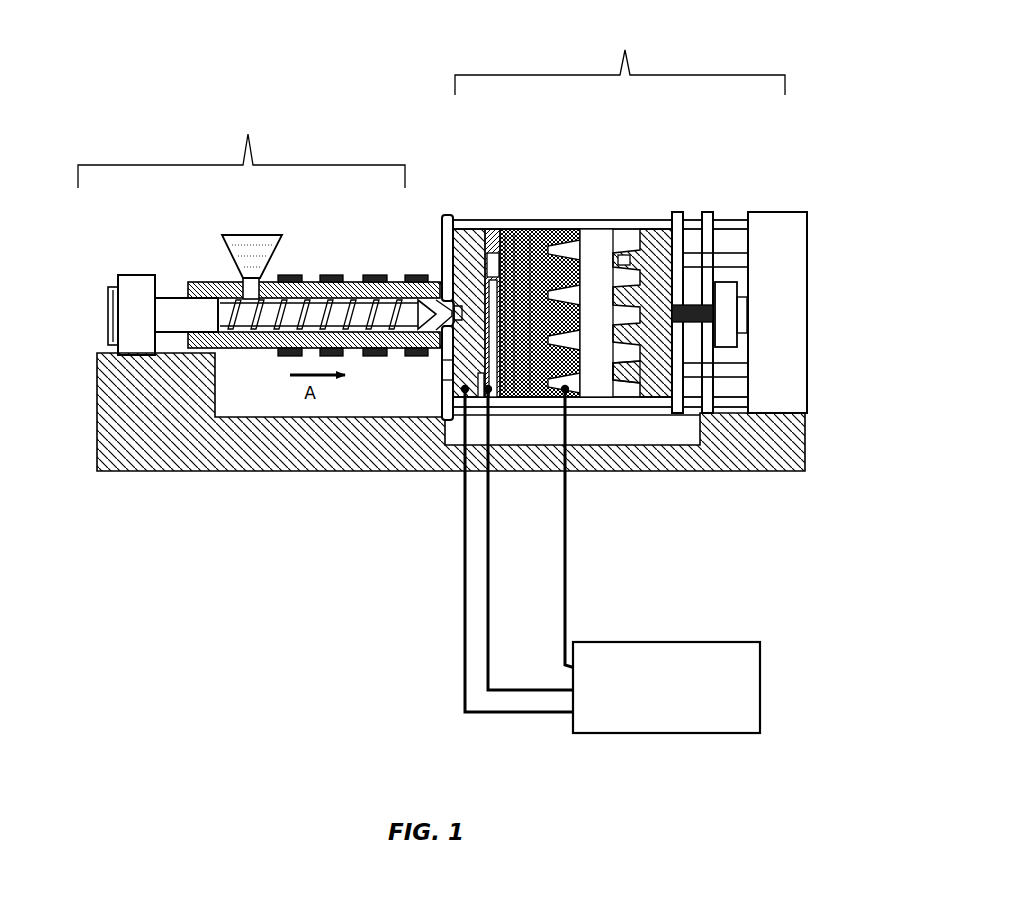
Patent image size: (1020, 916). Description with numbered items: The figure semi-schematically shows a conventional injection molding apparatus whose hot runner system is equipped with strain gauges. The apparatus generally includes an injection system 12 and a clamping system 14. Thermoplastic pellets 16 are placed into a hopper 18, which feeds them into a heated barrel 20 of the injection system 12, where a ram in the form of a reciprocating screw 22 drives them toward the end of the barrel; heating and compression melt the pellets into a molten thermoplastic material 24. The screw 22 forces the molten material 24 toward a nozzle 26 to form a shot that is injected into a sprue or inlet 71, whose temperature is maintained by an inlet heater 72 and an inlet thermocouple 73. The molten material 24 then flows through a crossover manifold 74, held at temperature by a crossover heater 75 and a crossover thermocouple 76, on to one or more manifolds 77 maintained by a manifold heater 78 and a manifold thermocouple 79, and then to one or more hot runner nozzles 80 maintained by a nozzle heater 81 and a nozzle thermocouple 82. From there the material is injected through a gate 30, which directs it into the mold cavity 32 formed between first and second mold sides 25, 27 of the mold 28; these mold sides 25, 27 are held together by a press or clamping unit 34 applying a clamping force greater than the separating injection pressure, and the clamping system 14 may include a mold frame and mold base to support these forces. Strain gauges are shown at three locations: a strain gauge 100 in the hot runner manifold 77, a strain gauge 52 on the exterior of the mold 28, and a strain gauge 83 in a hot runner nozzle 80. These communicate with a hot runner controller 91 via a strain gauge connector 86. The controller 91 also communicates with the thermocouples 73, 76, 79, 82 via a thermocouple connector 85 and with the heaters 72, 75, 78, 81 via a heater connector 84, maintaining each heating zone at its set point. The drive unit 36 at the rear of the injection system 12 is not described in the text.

The injection system 12 is at (241, 145).
The clamping system 14 is at (608, 504).
The thermoplastic pellets 16 is at (253, 263).
The hopper 18 is at (268, 237).
The heated barrel 20 is at (313, 274).
The reciprocating screw 22 is at (288, 318).
The molten thermoplastic material 24 is at (378, 300).
The first mold side 25 is at (552, 393).
The nozzle 26 is at (430, 275).
The second mold side 27 is at (626, 384).
The mold 28 is at (652, 392).
The gate 30 is at (446, 270).
The mold cavity 32 is at (578, 242).
The clamping unit 34 is at (802, 211).
The drive motor 36 is at (127, 272).
The strain gauge 52 is at (646, 242).
The inlet 71 is at (445, 268).
The inlet heater 72 is at (450, 372).
The inlet thermocouple 73 is at (438, 395).
The crossover manifold 74 is at (451, 216).
The crossover heater 75 is at (472, 240).
The crossover thermocouple 76 is at (490, 242).
The manifold 77 is at (500, 242).
The manifold heater 78 is at (508, 245).
The manifold thermocouple 79 is at (515, 245).
The hot runner nozzle 80 is at (543, 240).
The nozzle heater 81 is at (531, 240).
The nozzle thermocouple 82 is at (504, 256).
The strain gauge 83 is at (556, 240).
The heater connector 84 is at (462, 623).
The thermocouple connector 85 is at (491, 588).
The strain gauge connector 86 is at (570, 582).
The hot runner controller 91 is at (762, 710).
The strain gauge 100 is at (482, 395).